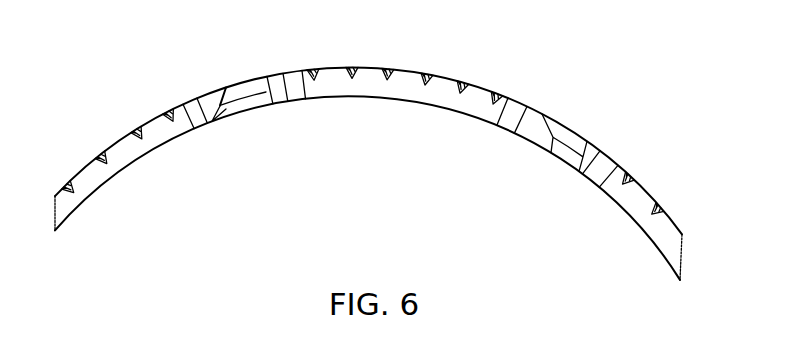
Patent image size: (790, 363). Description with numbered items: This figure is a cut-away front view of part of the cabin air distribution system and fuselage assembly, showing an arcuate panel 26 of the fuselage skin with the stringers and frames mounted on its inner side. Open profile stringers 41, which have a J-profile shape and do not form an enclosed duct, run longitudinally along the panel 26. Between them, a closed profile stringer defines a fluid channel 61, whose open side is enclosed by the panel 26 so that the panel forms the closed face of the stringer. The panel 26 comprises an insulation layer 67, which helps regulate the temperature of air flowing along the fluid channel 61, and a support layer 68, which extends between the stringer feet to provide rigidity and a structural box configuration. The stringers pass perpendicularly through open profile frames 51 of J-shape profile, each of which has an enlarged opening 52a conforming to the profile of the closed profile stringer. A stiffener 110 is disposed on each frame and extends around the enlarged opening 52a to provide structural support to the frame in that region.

The panel 26 is at (186, 101).
The open profile stringer 41 is at (99, 156).
The open profile frame 51 is at (159, 140).
The enlarged opening 52a is at (214, 122).
The fluid channel 61 is at (239, 92).
The insulation layer 67 is at (271, 76).
The support layer 68 is at (219, 102).
The stiffener 110 is at (273, 103).